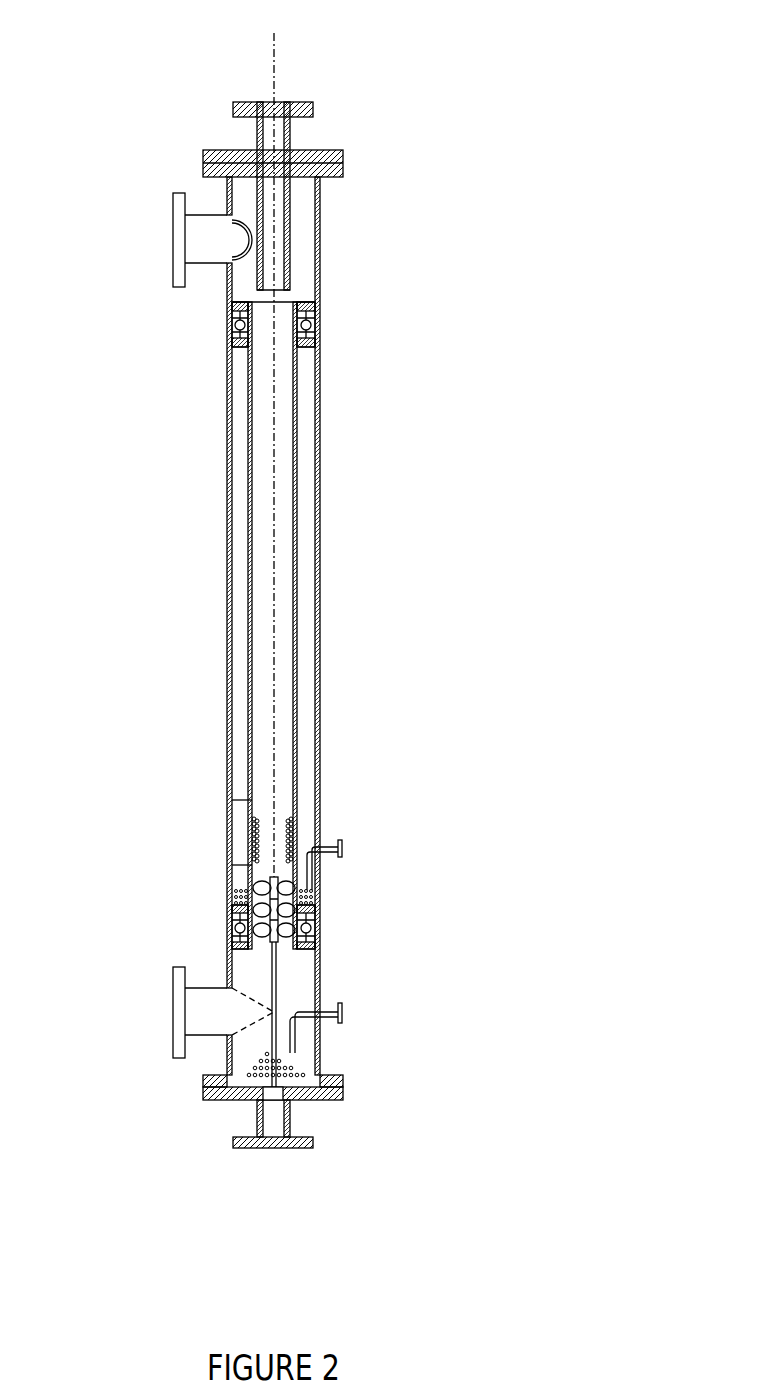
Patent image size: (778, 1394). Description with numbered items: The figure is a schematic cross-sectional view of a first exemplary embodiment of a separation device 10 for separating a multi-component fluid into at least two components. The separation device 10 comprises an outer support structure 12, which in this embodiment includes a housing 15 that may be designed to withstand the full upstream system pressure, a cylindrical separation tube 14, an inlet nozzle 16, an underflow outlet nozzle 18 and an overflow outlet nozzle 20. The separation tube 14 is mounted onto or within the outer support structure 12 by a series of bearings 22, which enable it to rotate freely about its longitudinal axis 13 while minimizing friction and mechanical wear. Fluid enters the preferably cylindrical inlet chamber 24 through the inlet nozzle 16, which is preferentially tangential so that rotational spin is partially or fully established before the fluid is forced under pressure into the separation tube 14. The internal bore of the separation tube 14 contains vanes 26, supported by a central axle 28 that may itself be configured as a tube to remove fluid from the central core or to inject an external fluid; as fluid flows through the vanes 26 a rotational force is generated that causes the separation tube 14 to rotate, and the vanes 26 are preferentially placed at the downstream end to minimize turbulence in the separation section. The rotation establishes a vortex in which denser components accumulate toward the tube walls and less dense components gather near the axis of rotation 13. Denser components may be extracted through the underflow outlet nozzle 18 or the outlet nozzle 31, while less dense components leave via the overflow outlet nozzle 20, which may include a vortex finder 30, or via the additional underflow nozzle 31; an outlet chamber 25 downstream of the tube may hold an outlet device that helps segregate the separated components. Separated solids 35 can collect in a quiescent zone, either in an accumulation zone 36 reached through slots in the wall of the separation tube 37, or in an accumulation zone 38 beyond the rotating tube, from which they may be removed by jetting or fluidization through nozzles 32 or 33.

The separation device 10 is at (350, 162).
The outer support structure 12 is at (320, 293).
The longitudinal axis 13 is at (272, 70).
The separation tube 14 is at (295, 472).
The housing 15 is at (320, 557).
The inlet nozzle 16 is at (172, 243).
The underflow outlet nozzle 18 is at (172, 1008).
The overflow outlet nozzle 20 is at (312, 90).
The bearings 22 is at (318, 323).
The inlet chamber 24 is at (300, 192).
The outlet chamber 25 is at (234, 960).
The vanes 26 is at (282, 884).
The central axle 28 is at (275, 979).
The vortex finder 30 is at (283, 242).
The outlet nozzle 31 is at (267, 1152).
The nozzle 32 is at (347, 855).
The nozzle 33 is at (342, 1012).
The separated solids 35 is at (232, 800).
The accumulation zone 36 is at (232, 885).
The slots in the wall of the separation tube 37 is at (232, 837).
The accumulation zone 38 is at (242, 1077).